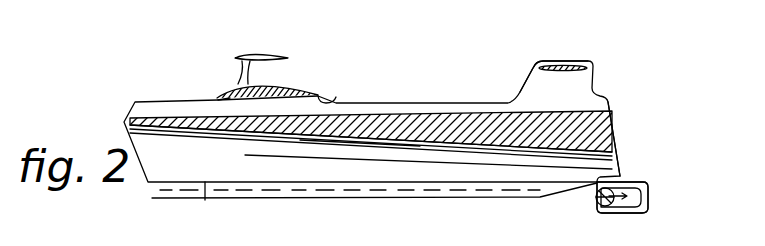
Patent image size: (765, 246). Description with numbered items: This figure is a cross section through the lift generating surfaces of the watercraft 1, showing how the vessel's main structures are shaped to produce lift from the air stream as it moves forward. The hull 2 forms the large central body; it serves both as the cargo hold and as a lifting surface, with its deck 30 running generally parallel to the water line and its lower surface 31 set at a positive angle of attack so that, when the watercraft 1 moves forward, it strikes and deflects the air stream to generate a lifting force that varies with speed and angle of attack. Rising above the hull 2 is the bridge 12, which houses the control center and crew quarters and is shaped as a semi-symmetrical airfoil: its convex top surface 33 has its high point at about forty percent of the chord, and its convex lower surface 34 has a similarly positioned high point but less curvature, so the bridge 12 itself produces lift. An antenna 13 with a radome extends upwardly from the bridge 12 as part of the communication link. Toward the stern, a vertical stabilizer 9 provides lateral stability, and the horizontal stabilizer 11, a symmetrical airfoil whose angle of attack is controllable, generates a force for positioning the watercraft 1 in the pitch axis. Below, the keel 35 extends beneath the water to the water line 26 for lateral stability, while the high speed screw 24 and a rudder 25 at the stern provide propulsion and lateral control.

The watercraft 1 is at (296, 168).
The hull 2 is at (603, 128).
The vertical stabilizer 9 is at (530, 73).
The horizontal stabilizer 11 is at (593, 72).
The bridge 12 is at (230, 95).
The antenna 13 is at (260, 56).
The high speed screw 24 is at (602, 200).
The rudder 25 is at (648, 203).
The water line 26 is at (206, 200).
The deck 30 is at (399, 120).
The lower surface 31 is at (355, 138).
The top surface 33 is at (288, 83).
The lower surface 34 is at (336, 97).
The keel 35 is at (413, 197).